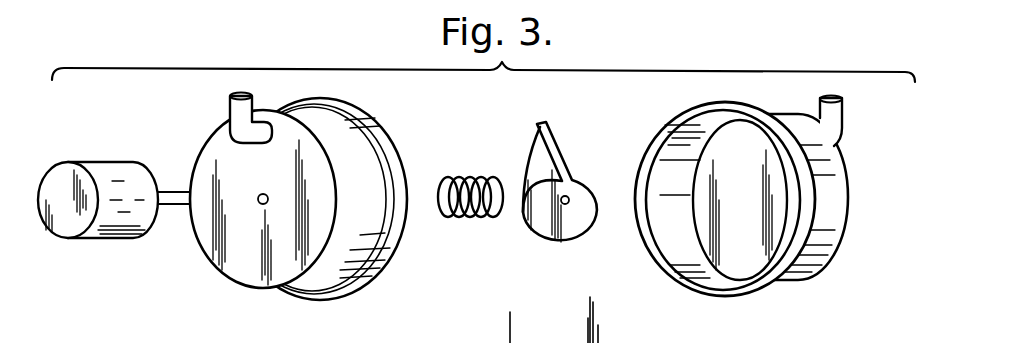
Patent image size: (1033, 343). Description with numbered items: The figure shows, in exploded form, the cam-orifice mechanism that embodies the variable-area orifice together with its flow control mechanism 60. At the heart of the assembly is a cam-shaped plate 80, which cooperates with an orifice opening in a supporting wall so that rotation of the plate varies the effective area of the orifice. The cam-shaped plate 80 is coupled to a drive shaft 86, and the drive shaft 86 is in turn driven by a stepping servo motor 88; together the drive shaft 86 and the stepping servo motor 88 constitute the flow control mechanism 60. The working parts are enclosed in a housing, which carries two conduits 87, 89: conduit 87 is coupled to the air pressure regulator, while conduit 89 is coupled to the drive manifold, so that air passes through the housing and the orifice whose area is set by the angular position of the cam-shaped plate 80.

The flow control mechanism 60 is at (159, 173).
The cam-shaped plate 80 is at (527, 200).
The drive shaft 86 is at (186, 206).
The conduit 87 is at (230, 99).
The stepping servo motor 88 is at (103, 239).
The conduit 89 is at (843, 101).